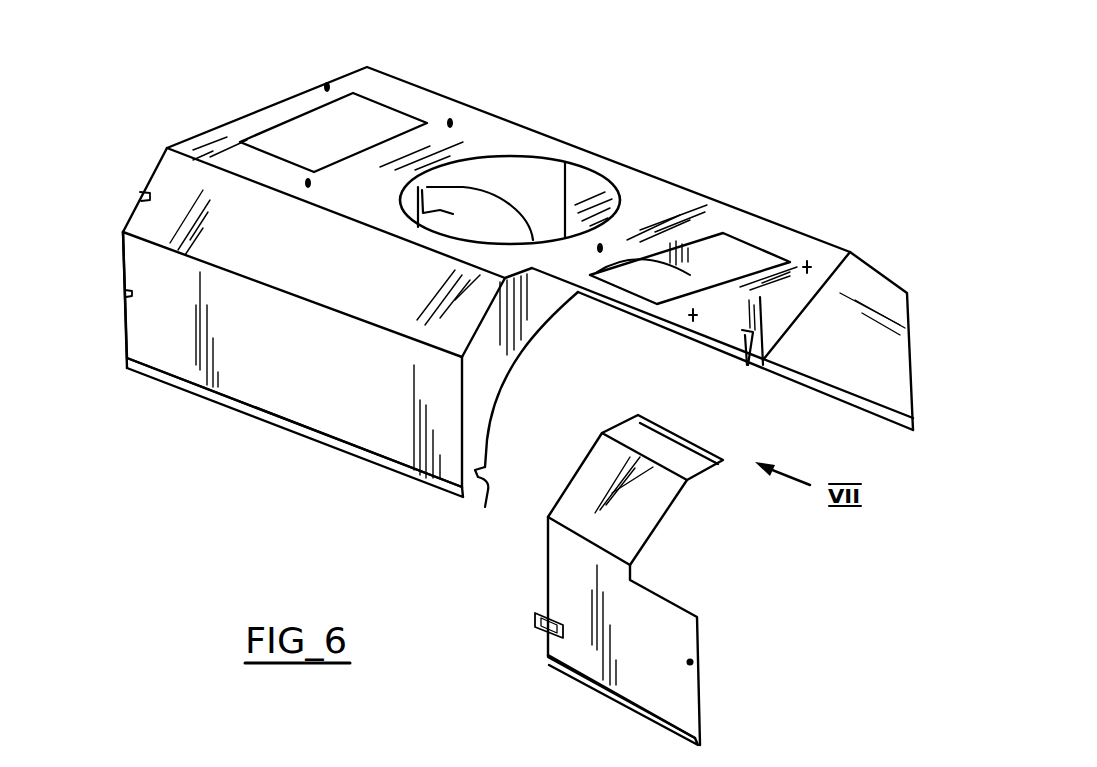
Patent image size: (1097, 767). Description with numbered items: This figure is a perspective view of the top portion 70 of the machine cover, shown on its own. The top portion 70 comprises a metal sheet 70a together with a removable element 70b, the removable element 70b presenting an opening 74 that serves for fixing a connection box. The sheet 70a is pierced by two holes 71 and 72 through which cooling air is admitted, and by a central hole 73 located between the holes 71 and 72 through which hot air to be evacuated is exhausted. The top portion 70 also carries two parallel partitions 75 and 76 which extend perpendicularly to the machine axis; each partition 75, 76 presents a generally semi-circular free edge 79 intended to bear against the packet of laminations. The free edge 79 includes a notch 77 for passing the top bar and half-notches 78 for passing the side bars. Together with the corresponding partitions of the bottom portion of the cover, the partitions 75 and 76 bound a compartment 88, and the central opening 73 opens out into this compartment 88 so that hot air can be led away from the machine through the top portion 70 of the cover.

The top portion 70 is at (170, 173).
The metal sheet 70a is at (150, 218).
The removable element 70b is at (637, 505).
The hole 71 is at (363, 117).
The hole 72 is at (690, 275).
The central hole 73 is at (580, 190).
The opening 74 is at (703, 587).
The partition 75 is at (477, 167).
The partition 76 is at (750, 330).
The notch 77 is at (455, 211).
The half-notch 78 is at (486, 490).
The free edge 79 is at (497, 197).
The compartment 88 is at (553, 213).